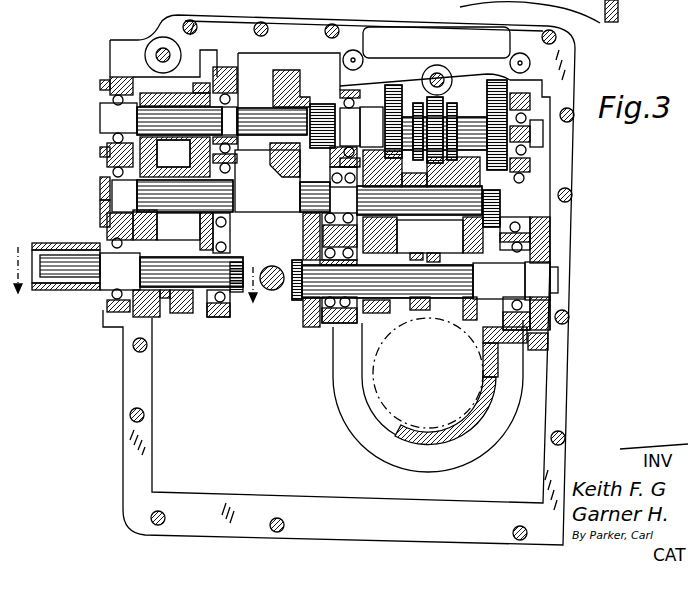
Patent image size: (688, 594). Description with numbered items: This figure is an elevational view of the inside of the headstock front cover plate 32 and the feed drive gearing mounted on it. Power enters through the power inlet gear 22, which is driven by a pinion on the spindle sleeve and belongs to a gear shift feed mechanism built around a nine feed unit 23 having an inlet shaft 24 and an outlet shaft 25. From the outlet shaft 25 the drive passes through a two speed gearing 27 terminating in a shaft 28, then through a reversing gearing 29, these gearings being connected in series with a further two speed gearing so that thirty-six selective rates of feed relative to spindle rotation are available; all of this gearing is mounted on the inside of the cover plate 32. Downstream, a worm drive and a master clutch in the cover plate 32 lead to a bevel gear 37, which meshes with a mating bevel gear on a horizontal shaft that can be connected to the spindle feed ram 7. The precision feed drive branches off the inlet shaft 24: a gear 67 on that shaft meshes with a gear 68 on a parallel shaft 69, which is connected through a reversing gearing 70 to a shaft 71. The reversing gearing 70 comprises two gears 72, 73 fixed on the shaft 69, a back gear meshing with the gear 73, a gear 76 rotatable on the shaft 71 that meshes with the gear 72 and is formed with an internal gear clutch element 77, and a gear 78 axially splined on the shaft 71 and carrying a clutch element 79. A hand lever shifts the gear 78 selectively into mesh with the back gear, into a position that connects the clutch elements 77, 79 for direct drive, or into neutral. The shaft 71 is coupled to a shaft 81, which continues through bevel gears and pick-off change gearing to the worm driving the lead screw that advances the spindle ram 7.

The spindle feed ram 7 is at (135, 285).
The power inlet gear 22 is at (542, 217).
The nine feed unit 23 is at (536, 167).
The inlet shaft 24 is at (493, 272).
The outlet shaft 25 is at (543, 135).
The two speed gearing 27 is at (315, 102).
The shaft 28 is at (100, 120).
The reversing gearing 29 is at (195, 95).
The cover plate 32 is at (572, 223).
The bevel gear 37 is at (382, 410).
The gear 67 is at (305, 310).
The gear 68 is at (307, 222).
The parallel shaft 69 is at (252, 185).
The reversing gearing 70 is at (100, 211).
The shaft 71 is at (110, 278).
The gear 72 is at (160, 163).
The gear 73 is at (192, 167).
The gear 76 is at (145, 318).
The internal gear clutch element 77 is at (162, 302).
The gear 78 is at (181, 314).
The clutch element 79 is at (166, 248).
The shaft 81 is at (36, 248).